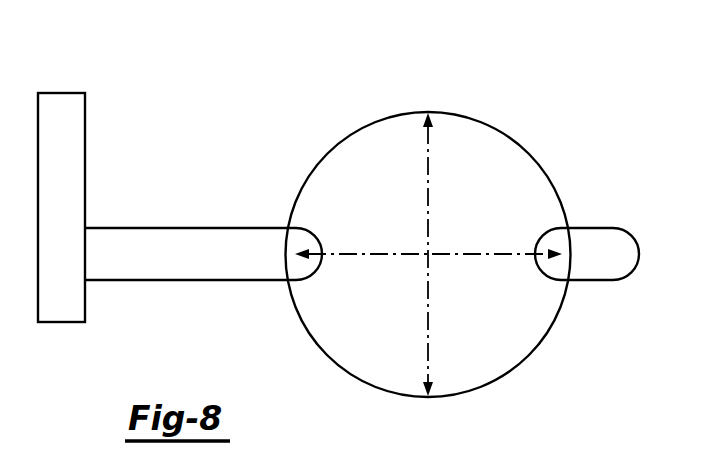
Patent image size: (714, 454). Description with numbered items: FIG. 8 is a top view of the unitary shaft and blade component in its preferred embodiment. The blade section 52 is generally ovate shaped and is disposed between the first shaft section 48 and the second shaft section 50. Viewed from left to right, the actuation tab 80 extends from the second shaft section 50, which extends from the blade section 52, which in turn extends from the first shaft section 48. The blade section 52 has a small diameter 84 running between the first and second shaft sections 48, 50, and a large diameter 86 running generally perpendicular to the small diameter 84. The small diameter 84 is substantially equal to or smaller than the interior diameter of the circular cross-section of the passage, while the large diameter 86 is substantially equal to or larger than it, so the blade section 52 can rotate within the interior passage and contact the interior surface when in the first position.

The actuation tab 80 is at (62, 93).
The second shaft section 50 is at (171, 243).
The blade section 52 is at (504, 153).
The first shaft section 48 is at (603, 241).
The large diameter 86 is at (428, 313).
The small diameter 84 is at (480, 257).